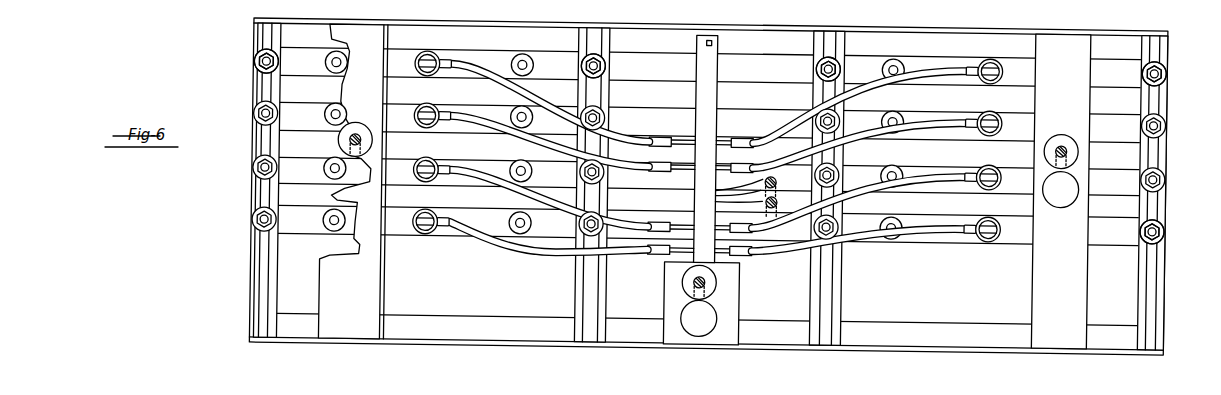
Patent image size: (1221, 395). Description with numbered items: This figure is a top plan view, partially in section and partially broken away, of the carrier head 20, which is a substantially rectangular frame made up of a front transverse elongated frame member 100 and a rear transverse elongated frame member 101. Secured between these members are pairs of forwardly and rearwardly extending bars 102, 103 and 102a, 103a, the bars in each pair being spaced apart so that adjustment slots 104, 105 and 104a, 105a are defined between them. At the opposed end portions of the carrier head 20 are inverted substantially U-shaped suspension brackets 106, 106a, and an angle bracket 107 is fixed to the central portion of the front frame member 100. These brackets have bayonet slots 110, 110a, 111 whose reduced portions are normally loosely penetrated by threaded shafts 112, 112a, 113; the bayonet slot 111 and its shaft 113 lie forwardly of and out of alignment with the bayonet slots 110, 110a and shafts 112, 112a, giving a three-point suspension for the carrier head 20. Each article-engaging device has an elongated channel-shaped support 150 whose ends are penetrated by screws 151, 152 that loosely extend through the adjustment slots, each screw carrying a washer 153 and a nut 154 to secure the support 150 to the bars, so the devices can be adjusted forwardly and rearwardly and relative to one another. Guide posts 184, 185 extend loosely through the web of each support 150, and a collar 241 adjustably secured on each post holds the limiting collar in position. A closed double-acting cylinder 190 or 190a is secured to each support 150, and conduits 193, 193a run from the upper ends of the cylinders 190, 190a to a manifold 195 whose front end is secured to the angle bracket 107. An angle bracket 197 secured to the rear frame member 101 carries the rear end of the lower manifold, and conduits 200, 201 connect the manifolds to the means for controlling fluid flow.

The carrier head 20 is at (970, 349).
The front transverse elongated frame member 100 is at (893, 340).
The rear transverse elongated frame member 101 is at (874, 20).
The bar 102 is at (1168, 277).
The bar 102a is at (272, 268).
The bar 103 is at (816, 277).
The bar 103a is at (590, 283).
The adjustment slot 104 is at (1152, 298).
The adjustment slot 104a is at (264, 290).
The adjustment slot 105 is at (828, 299).
The adjustment slot 105a is at (590, 298).
The suspension bracket 106 is at (1038, 282).
The suspension bracket 106a is at (378, 283).
The angle bracket 107 is at (733, 326).
The bayonet slot 110 is at (1060, 197).
The bayonet slot 110a is at (325, 217).
The bayonet slot 111 is at (700, 327).
The threaded shaft 112 is at (1062, 123).
The threaded shaft 112a is at (357, 121).
The threaded shaft 113 is at (710, 274).
The channel-shaped support 150 is at (468, 124).
The screw 151 is at (607, 62).
The screw 152 is at (256, 60).
The washer 153 is at (258, 54).
The nut 154 is at (258, 66).
The guide post 184 is at (529, 106).
The guide post 185 is at (333, 102).
The cylinder 190 is at (991, 48).
The cylinder 190a is at (428, 48).
The conduit 193 is at (758, 156).
The conduit 193a is at (653, 165).
The manifold 195 is at (698, 185).
The angle bracket 197 is at (714, 61).
The conduit 200 is at (765, 203).
The conduit 201 is at (765, 178).
The collar 241 is at (514, 107).